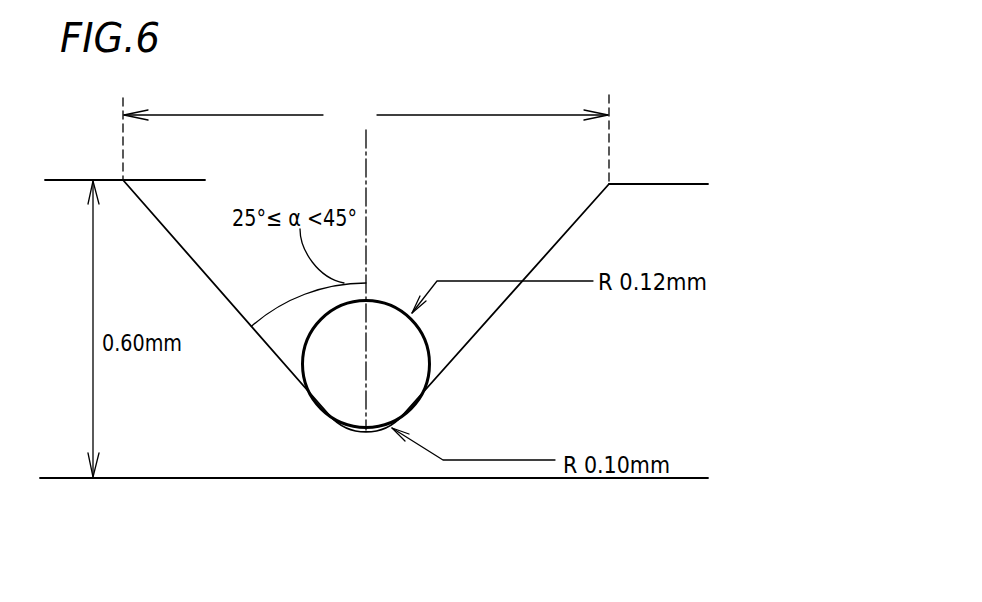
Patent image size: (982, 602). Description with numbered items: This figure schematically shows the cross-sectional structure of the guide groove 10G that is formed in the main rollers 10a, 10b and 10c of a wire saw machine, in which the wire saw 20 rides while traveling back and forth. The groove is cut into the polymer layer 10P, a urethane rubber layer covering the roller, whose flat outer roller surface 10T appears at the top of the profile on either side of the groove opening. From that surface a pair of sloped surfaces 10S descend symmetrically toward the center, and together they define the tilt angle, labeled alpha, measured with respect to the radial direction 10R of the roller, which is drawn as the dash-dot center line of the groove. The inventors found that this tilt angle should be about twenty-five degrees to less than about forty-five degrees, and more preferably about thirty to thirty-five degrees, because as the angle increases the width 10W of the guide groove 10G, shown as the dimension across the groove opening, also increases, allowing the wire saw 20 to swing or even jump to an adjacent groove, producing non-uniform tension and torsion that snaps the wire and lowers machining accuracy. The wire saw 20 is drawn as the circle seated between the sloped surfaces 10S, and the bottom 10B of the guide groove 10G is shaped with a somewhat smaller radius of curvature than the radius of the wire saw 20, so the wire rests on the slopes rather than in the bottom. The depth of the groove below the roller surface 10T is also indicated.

The main roller 10a is at (441, 323).
The main roller 10b is at (441, 323).
The main roller 10c is at (441, 323).
The top surface of guide member 10T is at (55, 180).
The polymer layer 10P is at (641, 217).
The sloped surfaces 10S is at (217, 287).
The bottom of the guide groove 10B is at (358, 432).
The guide groove 10G is at (455, 192).
The radial direction 10R is at (368, 185).
The width of the guide groove 10W is at (366, 115).
The wire saw 20 is at (377, 321).